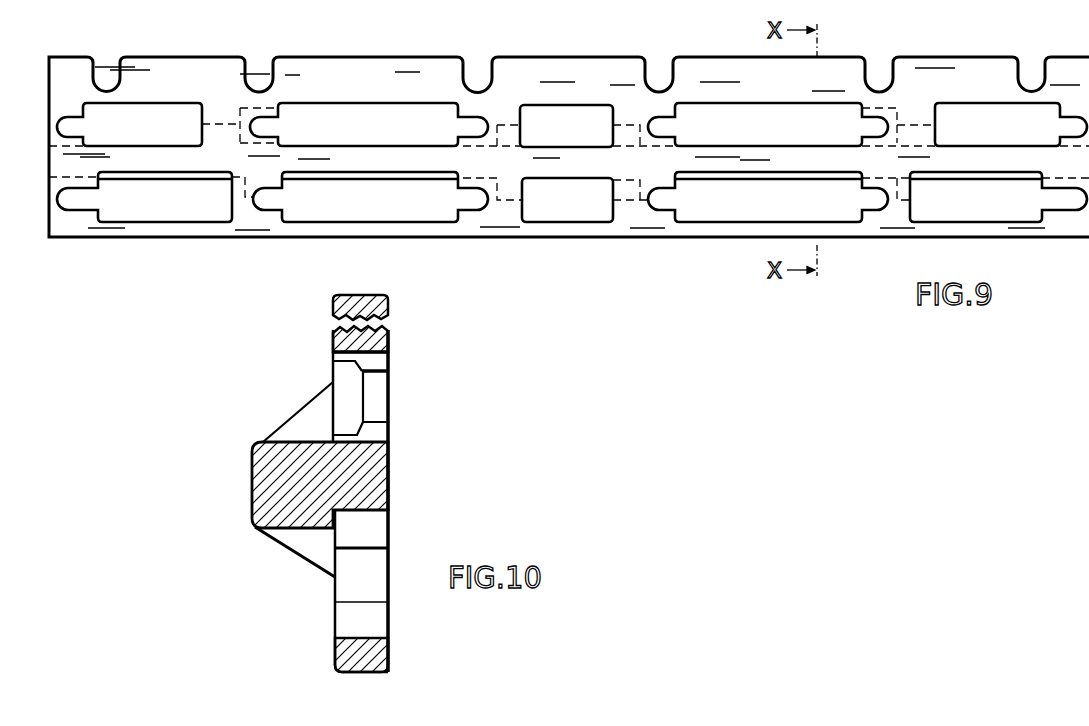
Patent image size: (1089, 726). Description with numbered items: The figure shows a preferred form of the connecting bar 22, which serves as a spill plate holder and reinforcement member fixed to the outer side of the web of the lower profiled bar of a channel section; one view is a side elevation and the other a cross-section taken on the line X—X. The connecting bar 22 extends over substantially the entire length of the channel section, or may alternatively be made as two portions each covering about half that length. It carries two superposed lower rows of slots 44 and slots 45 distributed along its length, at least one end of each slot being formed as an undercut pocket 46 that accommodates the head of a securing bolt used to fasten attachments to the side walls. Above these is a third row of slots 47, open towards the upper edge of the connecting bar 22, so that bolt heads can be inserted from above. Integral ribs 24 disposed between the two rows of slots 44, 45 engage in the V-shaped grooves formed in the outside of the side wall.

In FIG. 9, the connecting bar 22 is at (518, 52).
In FIG. 10, the connecting bar 22 is at (398, 393).
In FIG. 10, the ribs 24 is at (262, 507).
In FIG. 10, the slots 44 is at (378, 412).
In FIG. 10, the slots 45 is at (377, 560).
In FIG. 9, the undercut pocket 46 is at (74, 127).
In FIG. 10, the undercut pocket 46 is at (358, 366).
In FIG. 9, the slots 47 is at (102, 63).